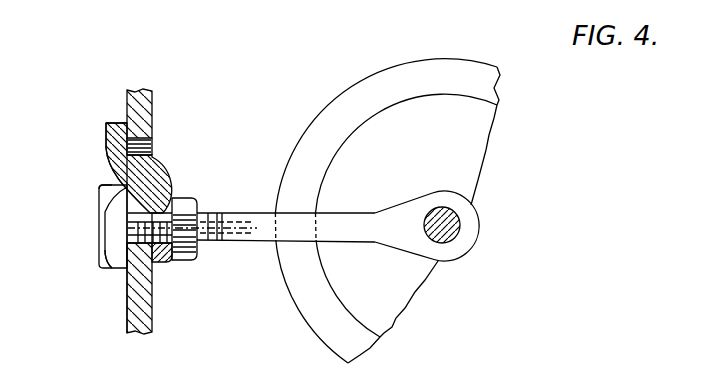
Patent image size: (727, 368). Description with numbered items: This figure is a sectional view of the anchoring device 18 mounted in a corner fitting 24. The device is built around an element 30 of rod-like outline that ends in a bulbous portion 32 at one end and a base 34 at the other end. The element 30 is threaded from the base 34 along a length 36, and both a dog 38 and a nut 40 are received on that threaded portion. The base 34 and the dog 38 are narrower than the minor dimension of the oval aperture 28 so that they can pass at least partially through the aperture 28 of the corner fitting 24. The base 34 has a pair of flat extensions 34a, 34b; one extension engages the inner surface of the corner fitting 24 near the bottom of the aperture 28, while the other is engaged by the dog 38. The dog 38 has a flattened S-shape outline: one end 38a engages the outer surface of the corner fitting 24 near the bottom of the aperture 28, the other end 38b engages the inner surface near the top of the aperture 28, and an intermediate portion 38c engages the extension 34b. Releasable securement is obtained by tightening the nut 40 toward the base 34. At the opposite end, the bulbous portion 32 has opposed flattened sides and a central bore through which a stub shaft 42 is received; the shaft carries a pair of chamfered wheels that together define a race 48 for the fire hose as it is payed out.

The anchoring device 18 is at (260, 160).
The corner fitting 24 is at (143, 118).
The aperture 28 is at (145, 151).
The element 30 is at (258, 238).
The bulbous portion 32 is at (467, 212).
The base 34 is at (108, 231).
The flat extension 34a is at (108, 263).
The flat extension 34b is at (105, 185).
The threaded length 36 is at (208, 243).
The dog 38 is at (166, 190).
The end of dog 38a is at (163, 268).
The end of dog 38b is at (106, 133).
The intermediate portion 38c is at (125, 187).
The nut 40 is at (187, 203).
The stub shaft 42 is at (453, 233).
The race 48 is at (497, 106).